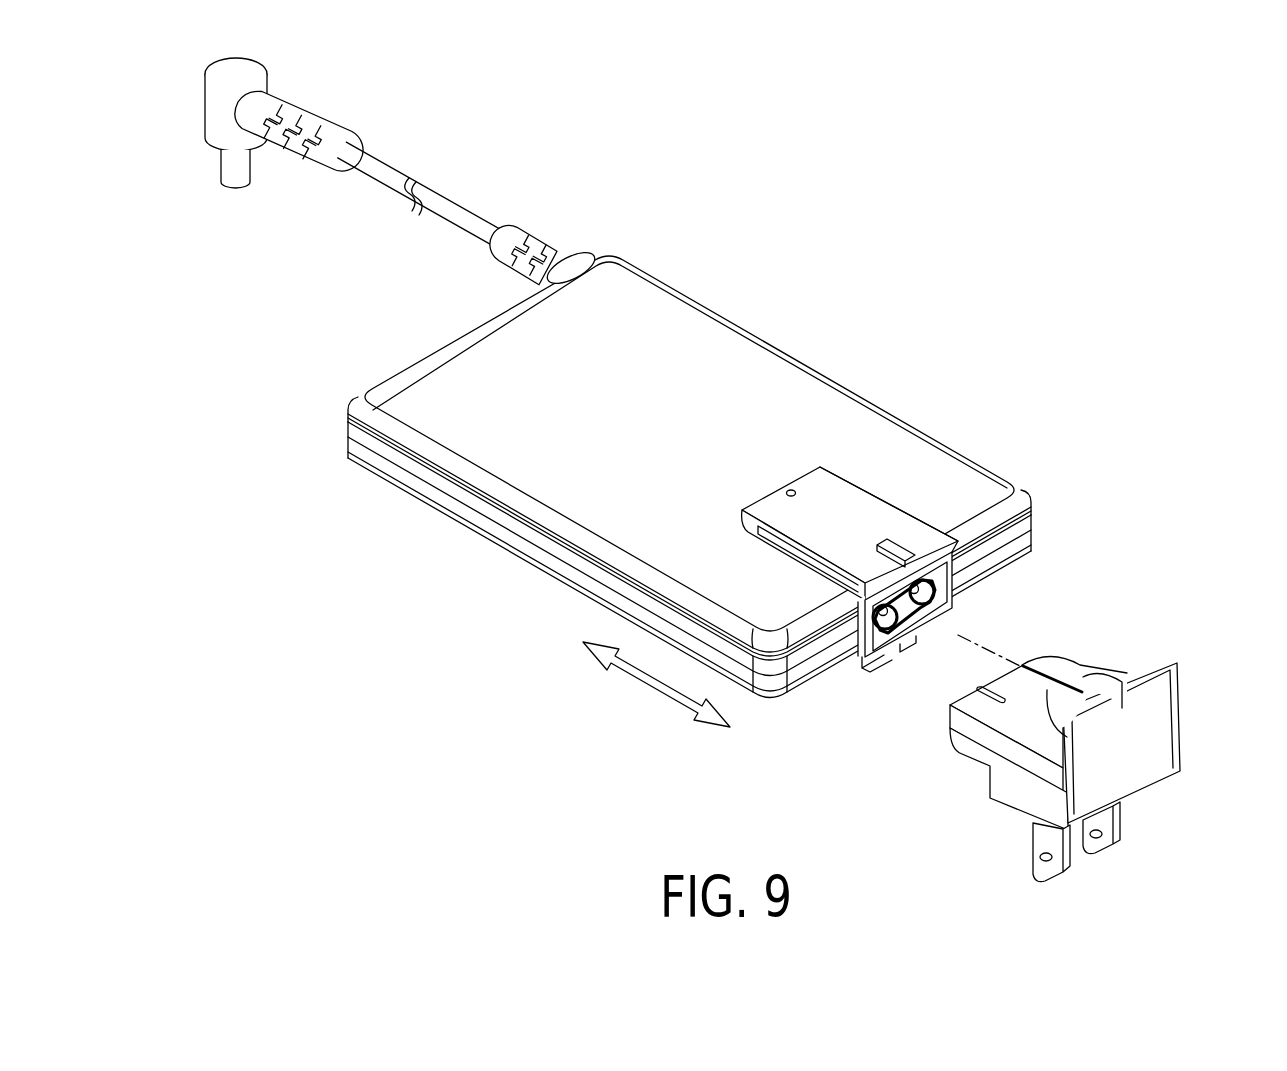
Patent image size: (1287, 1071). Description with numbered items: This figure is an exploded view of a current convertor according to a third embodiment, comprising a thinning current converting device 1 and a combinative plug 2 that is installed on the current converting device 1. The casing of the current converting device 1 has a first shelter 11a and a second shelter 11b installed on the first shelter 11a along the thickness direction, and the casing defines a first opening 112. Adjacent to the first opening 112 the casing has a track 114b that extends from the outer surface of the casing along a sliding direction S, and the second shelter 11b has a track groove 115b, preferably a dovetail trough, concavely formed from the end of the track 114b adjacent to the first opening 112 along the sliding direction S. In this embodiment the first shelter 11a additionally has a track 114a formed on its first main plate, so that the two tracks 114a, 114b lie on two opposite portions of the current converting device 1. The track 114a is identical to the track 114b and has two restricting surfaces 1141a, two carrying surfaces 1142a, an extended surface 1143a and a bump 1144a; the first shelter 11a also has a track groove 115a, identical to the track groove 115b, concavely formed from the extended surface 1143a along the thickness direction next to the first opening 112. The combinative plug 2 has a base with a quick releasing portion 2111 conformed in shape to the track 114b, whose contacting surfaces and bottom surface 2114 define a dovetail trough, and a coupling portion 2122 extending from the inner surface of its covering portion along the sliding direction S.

The current converting device 1 is at (660, 407).
The first shelter 11a is at (1034, 515).
The second shelter 11b is at (1036, 540).
The first opening 112 is at (962, 596).
The track 114a is at (826, 427).
The restricting surfaces 1141a is at (770, 522).
The carrying surfaces 1142a is at (750, 520).
The extended surface 1143a is at (845, 505).
The bump 1144a is at (791, 489).
The track groove 115a is at (882, 546).
The track 114b is at (868, 662).
The track groove 115b is at (909, 655).
The combinative plug 2 is at (1025, 737).
The quick releasing portion 2111 is at (934, 746).
The bottom surface 2114 is at (1035, 736).
The coupling portion 2122 is at (1105, 668).
The sliding direction S is at (652, 677).